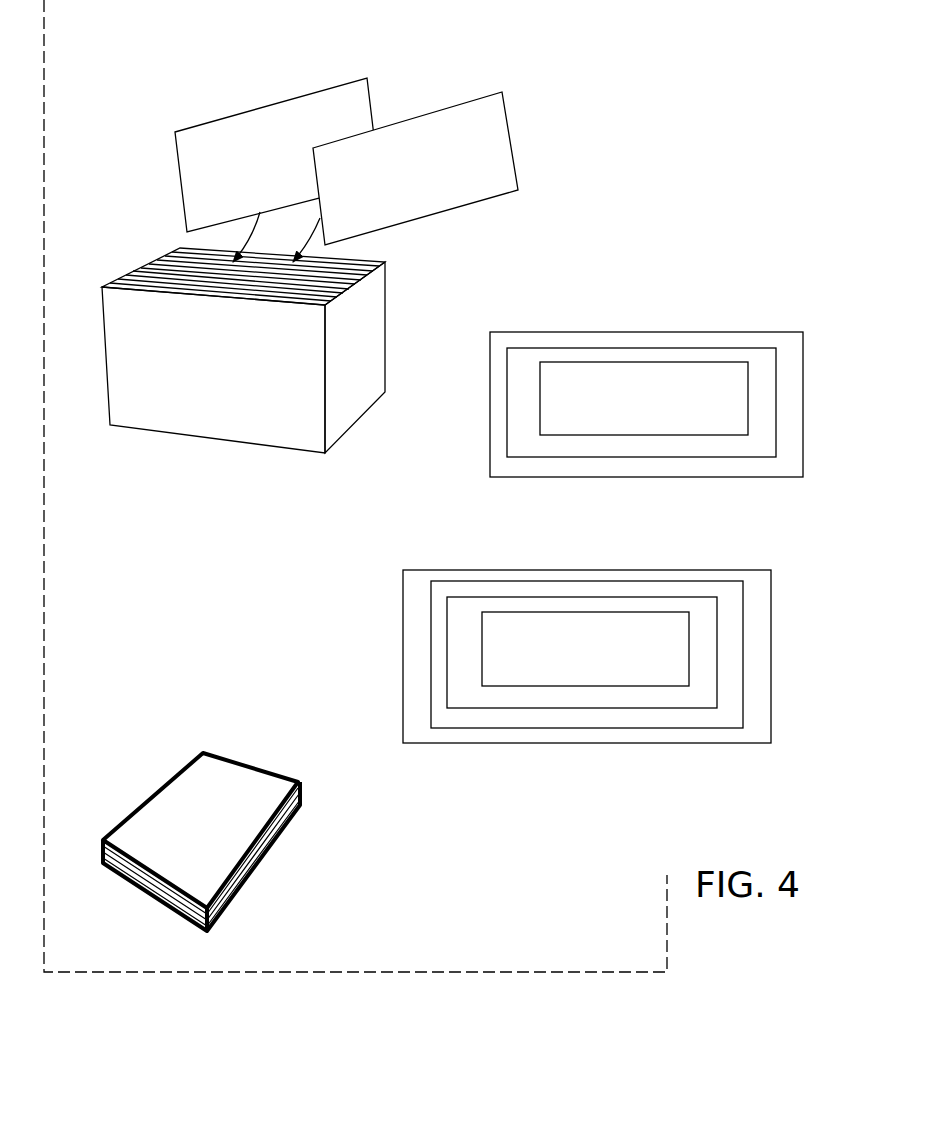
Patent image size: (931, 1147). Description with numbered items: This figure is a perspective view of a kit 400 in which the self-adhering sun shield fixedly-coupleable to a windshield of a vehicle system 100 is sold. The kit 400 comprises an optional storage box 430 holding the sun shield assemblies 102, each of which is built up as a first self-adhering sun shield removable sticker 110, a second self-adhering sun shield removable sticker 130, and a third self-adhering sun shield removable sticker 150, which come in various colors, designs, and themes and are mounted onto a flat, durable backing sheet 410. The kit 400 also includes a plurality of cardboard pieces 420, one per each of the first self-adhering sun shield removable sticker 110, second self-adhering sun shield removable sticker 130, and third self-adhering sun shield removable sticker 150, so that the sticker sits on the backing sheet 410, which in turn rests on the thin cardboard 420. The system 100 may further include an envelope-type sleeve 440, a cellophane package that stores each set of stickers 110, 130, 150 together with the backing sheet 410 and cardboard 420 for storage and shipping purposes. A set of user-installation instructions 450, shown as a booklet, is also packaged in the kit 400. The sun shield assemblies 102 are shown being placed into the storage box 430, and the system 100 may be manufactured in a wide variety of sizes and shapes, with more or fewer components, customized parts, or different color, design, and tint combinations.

The self-adhering sun shield fixedly-coupleable to a windshield of a vehicle system 100 is at (642, 75).
The kit 400 is at (653, 115).
The sun shield assembly 102 is at (427, 108).
The first self-adhering sun shield removable sticker 110 is at (553, 510).
The second self-adhering sun shield removable sticker 130 is at (612, 516).
The third self-adhering sun shield removable sticker 150 is at (666, 513).
The backing sheet 410 is at (720, 443).
The cardboard pieces 420 is at (734, 468).
The storage box 430 is at (210, 394).
The envelope-type sleeve 440 is at (595, 736).
The set of user-installation instructions 450 is at (262, 796).